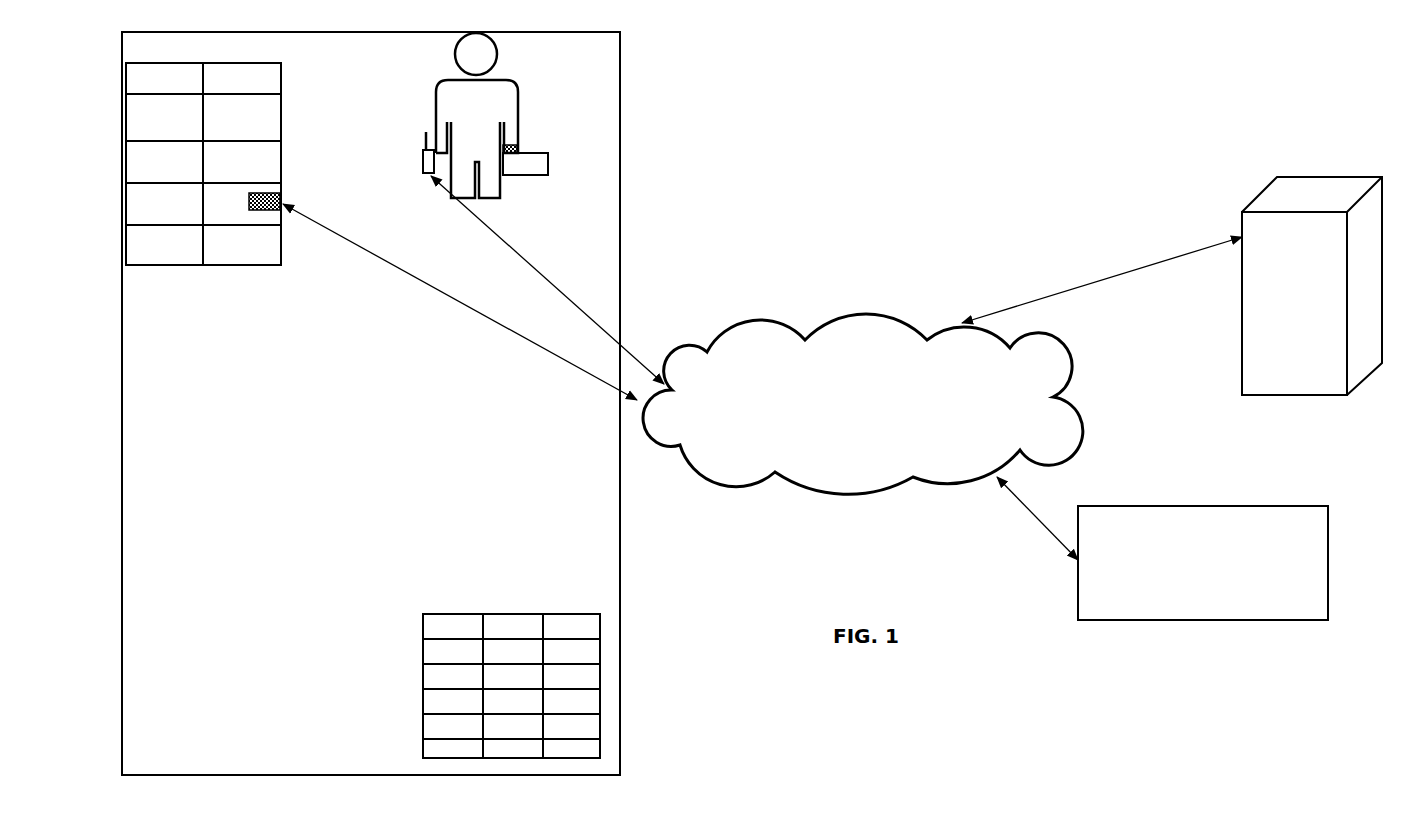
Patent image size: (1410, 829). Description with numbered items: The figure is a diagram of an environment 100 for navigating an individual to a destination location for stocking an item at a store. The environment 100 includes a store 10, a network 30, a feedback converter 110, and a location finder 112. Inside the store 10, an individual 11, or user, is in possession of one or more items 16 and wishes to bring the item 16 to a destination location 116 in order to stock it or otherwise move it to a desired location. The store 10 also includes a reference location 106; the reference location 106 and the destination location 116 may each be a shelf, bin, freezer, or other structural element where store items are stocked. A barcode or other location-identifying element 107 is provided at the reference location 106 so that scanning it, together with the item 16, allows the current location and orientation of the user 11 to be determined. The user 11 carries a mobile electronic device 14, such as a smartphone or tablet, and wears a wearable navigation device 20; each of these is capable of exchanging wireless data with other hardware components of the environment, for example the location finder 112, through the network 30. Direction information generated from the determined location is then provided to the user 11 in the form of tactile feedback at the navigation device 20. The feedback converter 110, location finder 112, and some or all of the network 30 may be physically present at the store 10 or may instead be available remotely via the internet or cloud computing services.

The store 10 is at (371, 403).
The individual 11 is at (435, 90).
The mobile electronic device 14 is at (421, 162).
The item 16 is at (525, 164).
The wearable navigation device 20 is at (517, 147).
The network 30 is at (863, 404).
The environment 100 is at (1139, 118).
The reference location 106 is at (285, 83).
The location-identifying element 107 is at (283, 207).
The feedback converter 110 is at (1162, 548).
The location finder 112 is at (1172, 286).
The destination location 116 is at (478, 612).